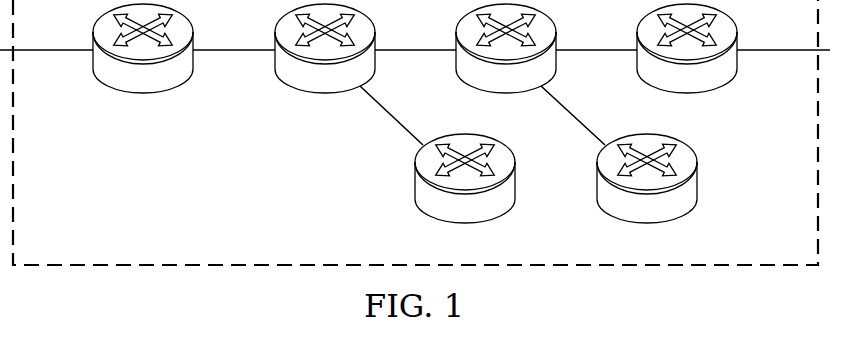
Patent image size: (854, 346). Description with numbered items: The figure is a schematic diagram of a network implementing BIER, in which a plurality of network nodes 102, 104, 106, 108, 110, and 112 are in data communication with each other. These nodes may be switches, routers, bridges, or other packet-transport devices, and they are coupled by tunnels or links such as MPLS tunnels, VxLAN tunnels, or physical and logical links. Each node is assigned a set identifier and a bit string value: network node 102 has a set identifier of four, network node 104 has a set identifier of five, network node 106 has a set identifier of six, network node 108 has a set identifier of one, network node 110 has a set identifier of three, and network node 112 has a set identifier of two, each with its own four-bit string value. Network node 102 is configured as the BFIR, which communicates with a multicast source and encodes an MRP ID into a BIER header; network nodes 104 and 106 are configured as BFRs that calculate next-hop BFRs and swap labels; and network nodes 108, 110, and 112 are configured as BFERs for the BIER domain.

The network node 102 is at (93, 42).
The network node 104 is at (275, 42).
The network node 106 is at (557, 40).
The network node 108 is at (738, 40).
The network node 110 is at (517, 180).
The network node 112 is at (698, 180).